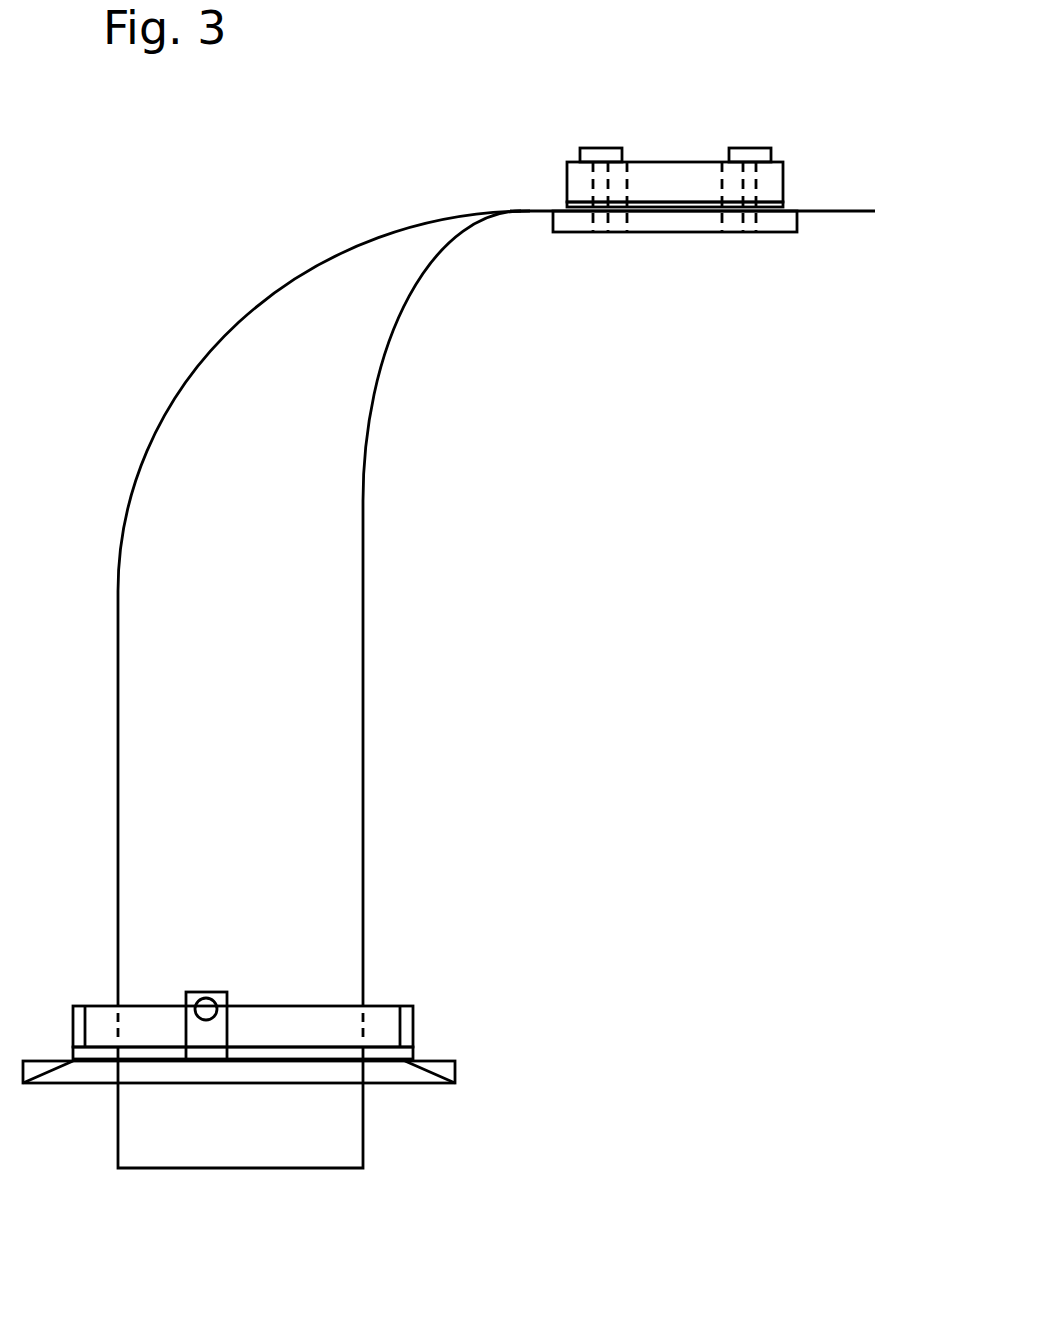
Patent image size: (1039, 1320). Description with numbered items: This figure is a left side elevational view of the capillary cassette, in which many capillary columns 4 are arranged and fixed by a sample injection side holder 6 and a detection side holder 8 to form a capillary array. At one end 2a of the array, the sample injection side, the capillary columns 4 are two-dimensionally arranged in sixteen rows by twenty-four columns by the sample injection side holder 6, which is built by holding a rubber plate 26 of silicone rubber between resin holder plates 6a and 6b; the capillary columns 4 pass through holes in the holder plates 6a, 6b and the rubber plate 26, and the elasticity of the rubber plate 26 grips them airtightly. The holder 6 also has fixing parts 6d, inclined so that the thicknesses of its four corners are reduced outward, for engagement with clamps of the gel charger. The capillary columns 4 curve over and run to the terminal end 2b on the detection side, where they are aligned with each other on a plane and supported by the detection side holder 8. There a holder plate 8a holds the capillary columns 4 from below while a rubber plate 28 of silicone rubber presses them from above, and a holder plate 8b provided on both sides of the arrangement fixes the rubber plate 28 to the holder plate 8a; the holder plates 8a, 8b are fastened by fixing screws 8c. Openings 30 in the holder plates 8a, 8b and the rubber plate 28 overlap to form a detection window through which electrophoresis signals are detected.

The capillary columns 4 is at (345, 643).
The end of the capillary array 2a is at (347, 1152).
The terminal end of the capillary array 2b is at (855, 214).
The sample injection side holder 6 is at (525, 950).
The holder plate 6a is at (418, 1083).
The holder plate 6b is at (390, 1006).
The fixing parts 6d is at (55, 1070).
The rubber plate 26 is at (415, 1055).
The detection side holder 8 is at (888, 82).
The holder plate 8a is at (773, 232).
The holder plate 8b is at (783, 171).
The fixing screws 8c is at (764, 148).
The rubber plate 28 is at (783, 205).
The openings 30 is at (720, 172).